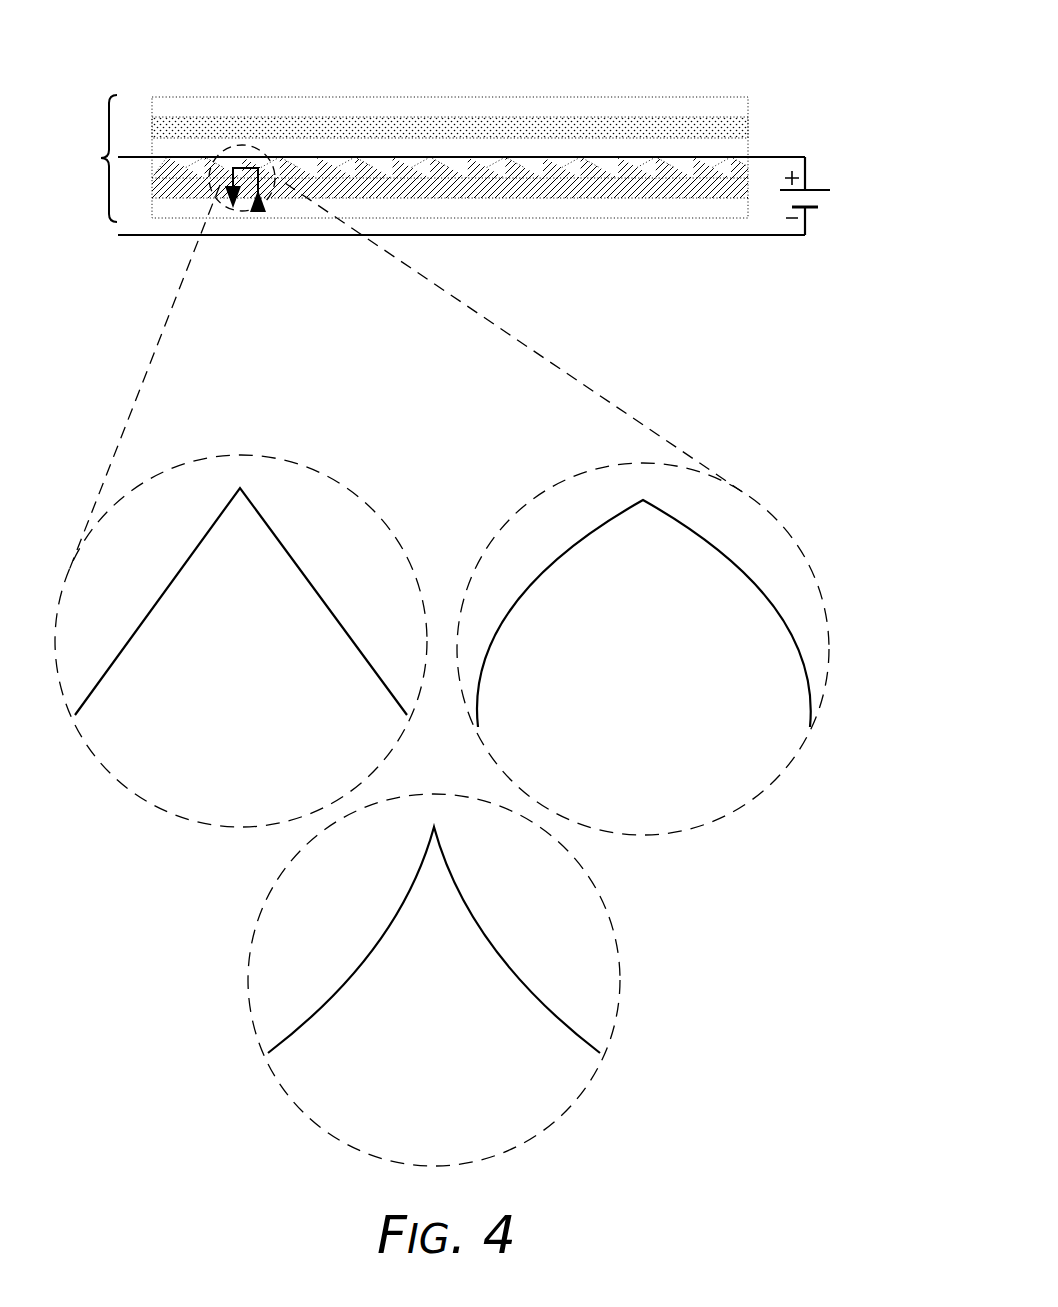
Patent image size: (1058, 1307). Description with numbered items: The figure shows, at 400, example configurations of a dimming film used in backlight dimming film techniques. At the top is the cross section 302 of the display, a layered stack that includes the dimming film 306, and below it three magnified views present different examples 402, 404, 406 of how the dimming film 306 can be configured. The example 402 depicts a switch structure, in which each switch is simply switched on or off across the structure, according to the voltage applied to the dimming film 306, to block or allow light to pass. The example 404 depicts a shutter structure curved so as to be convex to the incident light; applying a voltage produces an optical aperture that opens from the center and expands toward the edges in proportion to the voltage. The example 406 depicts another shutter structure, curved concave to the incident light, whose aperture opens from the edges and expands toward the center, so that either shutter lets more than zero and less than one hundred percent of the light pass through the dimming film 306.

The example configurations of the dimming film 400 is at (436, 288).
The cross section 302 is at (436, 165).
The dimming film 306 is at (578, 190).
The switch structure example 402 is at (241, 641).
The convex shutter structure example 404 is at (643, 649).
The concave shutter structure example 406 is at (434, 980).